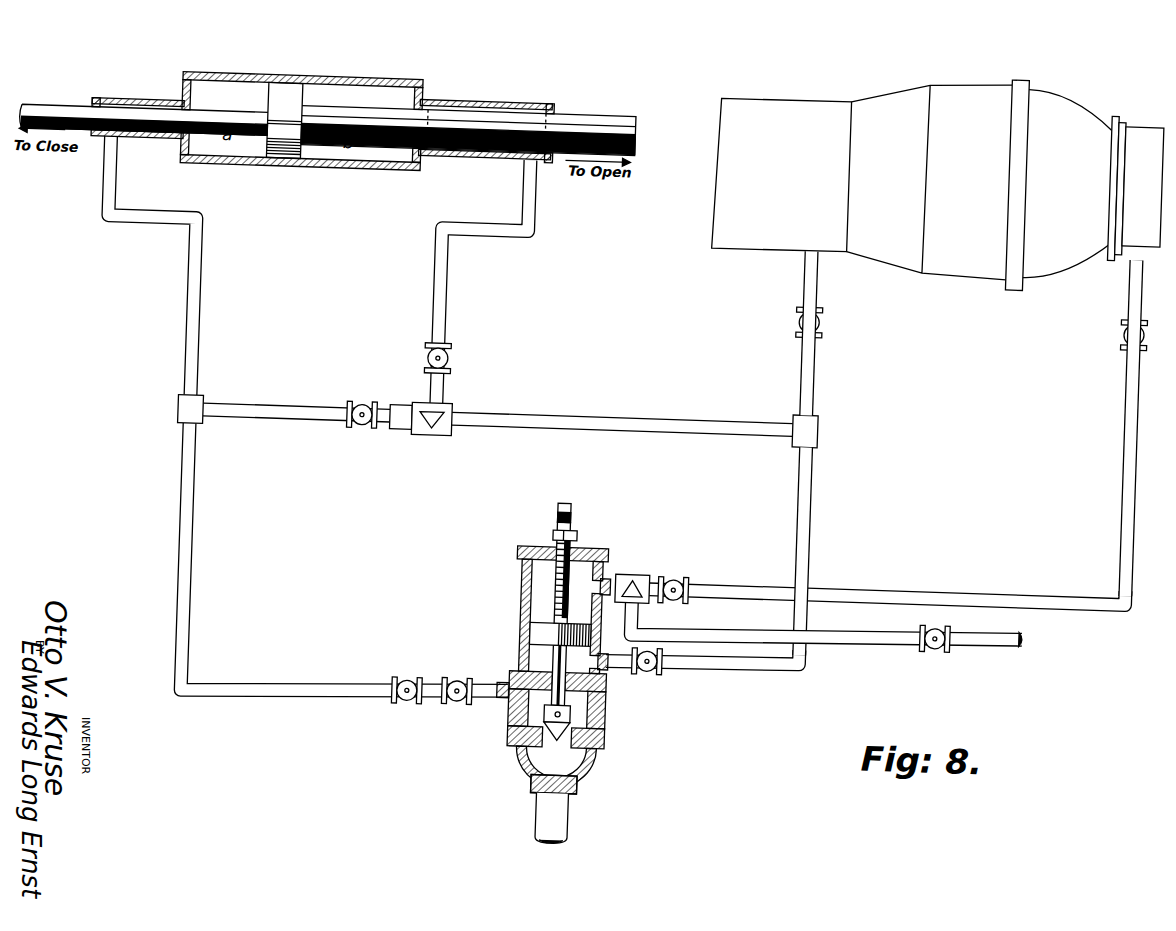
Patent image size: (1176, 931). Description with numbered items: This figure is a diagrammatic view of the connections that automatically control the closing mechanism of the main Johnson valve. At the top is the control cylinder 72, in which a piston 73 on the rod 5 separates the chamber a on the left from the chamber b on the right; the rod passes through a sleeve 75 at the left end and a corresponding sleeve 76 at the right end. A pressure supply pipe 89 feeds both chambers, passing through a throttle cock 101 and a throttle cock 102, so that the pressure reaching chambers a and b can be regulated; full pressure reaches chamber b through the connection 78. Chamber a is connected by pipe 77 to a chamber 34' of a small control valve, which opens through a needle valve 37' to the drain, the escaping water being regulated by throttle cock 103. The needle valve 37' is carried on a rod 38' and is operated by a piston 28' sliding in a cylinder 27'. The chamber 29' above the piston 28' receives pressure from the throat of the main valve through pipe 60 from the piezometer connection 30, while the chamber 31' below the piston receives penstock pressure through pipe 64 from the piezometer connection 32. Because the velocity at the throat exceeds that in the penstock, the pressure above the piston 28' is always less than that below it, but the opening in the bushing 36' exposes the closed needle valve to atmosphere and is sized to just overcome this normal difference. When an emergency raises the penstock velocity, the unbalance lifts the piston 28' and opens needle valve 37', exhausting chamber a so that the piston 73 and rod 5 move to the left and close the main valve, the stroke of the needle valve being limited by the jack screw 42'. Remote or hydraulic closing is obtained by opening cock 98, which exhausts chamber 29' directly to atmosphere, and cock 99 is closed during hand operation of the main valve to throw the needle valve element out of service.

The rod 5 is at (52, 116).
The sleeve 75 is at (138, 100).
The right stuffing box 76 is at (490, 92).
The cylinder 72 is at (377, 166).
The piston 73 is at (270, 160).
The pipe 77 is at (139, 220).
The pipe connection 78 is at (523, 199).
The pipe 89 is at (297, 408).
The throttle cock 101 is at (360, 421).
The throttle cock 102 is at (448, 350).
The piezometer connection 32 is at (802, 233).
The piezometer connection 30 is at (1129, 227).
The pipe 60 is at (1124, 439).
The pipe 64 is at (814, 488).
The cock 98 is at (942, 624).
The cock 99 is at (418, 696).
The throttle cock 103 is at (467, 696).
The jack screw 42' is at (597, 505).
The cylinder 27' is at (584, 615).
The chamber 29' is at (525, 572).
The piston 28' is at (532, 632).
The chamber 31' is at (518, 674).
The rod 38' is at (606, 703).
The chamber 34' is at (585, 720).
The needle valve 37' is at (563, 749).
The bushing 36' is at (537, 795).